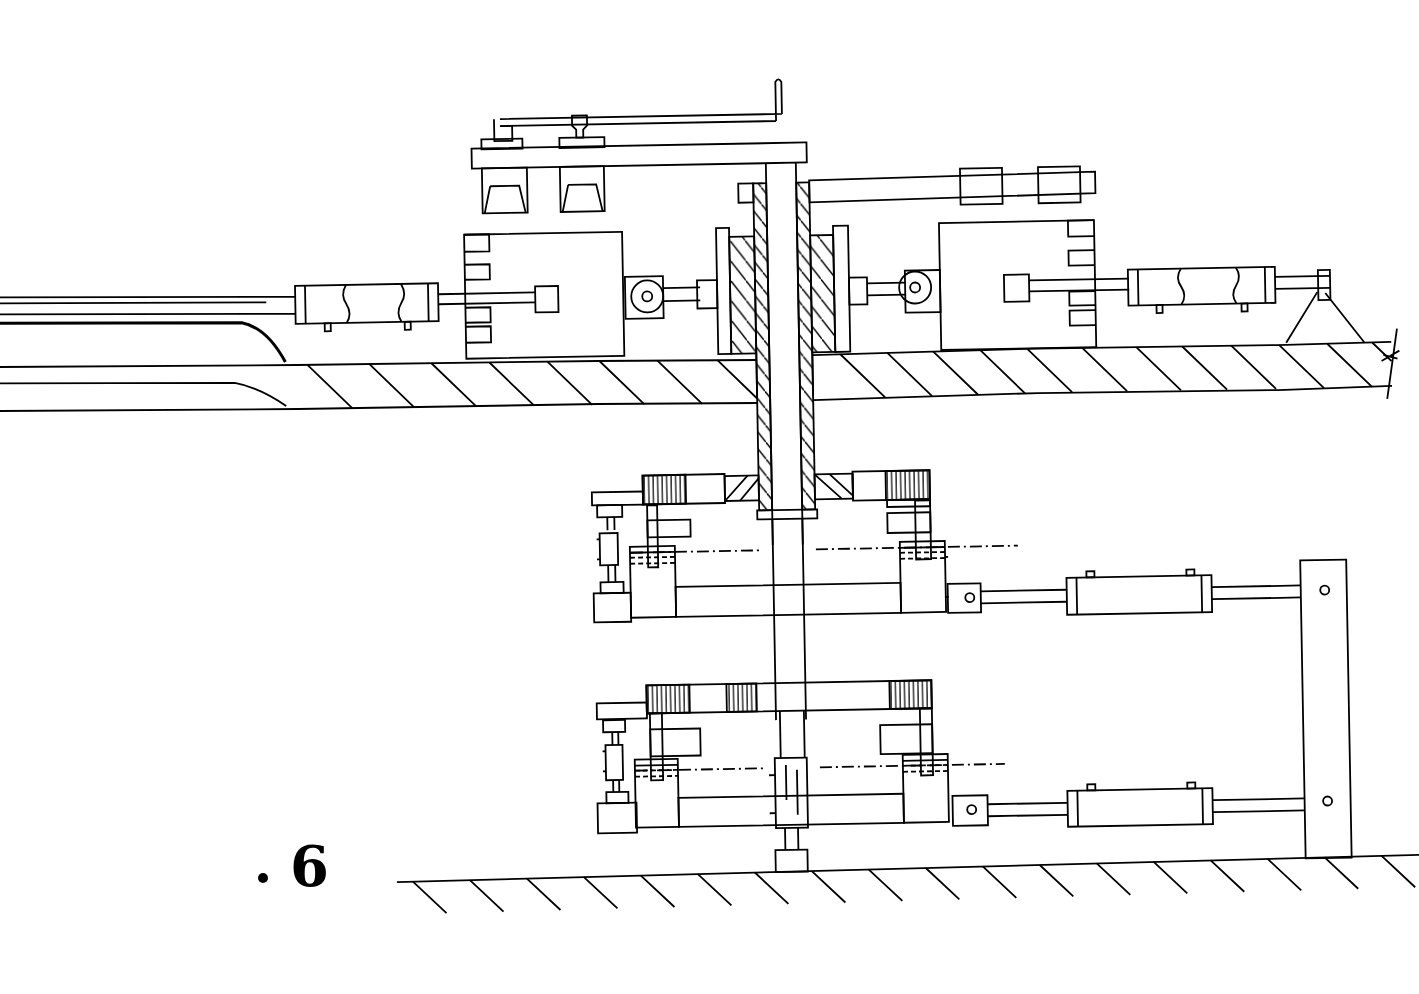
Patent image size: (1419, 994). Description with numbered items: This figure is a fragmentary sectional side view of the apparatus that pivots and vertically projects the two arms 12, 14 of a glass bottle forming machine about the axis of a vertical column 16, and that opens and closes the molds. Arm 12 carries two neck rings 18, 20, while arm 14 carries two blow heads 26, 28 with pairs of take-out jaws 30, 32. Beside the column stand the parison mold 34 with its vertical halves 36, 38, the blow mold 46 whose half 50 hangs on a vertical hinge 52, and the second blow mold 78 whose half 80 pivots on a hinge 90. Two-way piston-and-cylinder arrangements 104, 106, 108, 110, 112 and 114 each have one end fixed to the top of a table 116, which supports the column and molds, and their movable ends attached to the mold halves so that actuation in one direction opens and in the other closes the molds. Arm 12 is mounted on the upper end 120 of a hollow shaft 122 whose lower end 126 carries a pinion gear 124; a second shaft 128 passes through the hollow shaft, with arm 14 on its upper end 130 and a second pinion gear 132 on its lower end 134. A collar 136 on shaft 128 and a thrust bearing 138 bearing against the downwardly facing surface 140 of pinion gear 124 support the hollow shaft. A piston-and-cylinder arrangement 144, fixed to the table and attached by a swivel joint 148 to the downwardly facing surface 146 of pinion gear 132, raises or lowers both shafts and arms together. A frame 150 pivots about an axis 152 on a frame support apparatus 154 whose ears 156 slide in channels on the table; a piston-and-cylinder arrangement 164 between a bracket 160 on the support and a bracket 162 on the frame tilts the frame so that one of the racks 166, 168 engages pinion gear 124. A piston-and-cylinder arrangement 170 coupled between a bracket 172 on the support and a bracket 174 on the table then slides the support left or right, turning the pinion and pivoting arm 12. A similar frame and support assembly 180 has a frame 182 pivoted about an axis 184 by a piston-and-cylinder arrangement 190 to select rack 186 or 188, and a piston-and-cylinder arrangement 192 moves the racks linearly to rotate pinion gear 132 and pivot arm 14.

The arm 12 is at (900, 188).
The arm 14 is at (650, 145).
The column 16 is at (752, 208).
The neck ring 18 is at (1058, 166).
The neck ring 20 is at (980, 166).
The blow head 26 is at (490, 110).
The blow head 28 is at (573, 110).
The take-out jaws 30 is at (500, 204).
The take-out jaws 32 is at (583, 210).
The parison mold 34 is at (720, 232).
The mold half 36 is at (724, 262).
The mold half 38 is at (845, 264).
The blow mold 46 is at (1112, 212).
The mold half 50 is at (964, 268).
The hinge 52 is at (1105, 246).
The second blow mold 78 is at (400, 212).
The mold half 80 is at (572, 285).
The hinge 90 is at (470, 259).
The piston-and-cylinder arrangement 104 is at (655, 308).
The piston-and-cylinder arrangement 106 is at (915, 305).
The piston-and-cylinder arrangement 108 is at (1225, 268).
The piston-and-cylinder arrangement 110 is at (1155, 300).
The piston-and-cylinder arrangement 112 is at (318, 318).
The piston-and-cylinder arrangement 114 is at (365, 288).
The table 116 is at (378, 402).
The upper end of hollow shaft 120 is at (812, 205).
The hollow shaft 122 is at (758, 410).
The pinion gear 124 is at (852, 488).
The lower end of hollow shaft 126 is at (815, 480).
The second shaft 128 is at (772, 443).
The upper end of second shaft 130 is at (790, 175).
The second pinion gear 132 is at (848, 690).
The lower end of second shaft 134 is at (795, 688).
The collar 136 is at (764, 517).
The thrust bearing 138 is at (806, 512).
The downwardly facing surface of pinion gear 140 is at (848, 493).
The piston-and-cylinder arrangement 144 is at (770, 838).
The downwardly facing surface of pinion gear 146 is at (806, 720).
The swivel joint 148 is at (776, 727).
The frame 150 is at (983, 497).
The axis 152 is at (1018, 548).
The frame support apparatus 154 is at (940, 578).
The ears 156 is at (643, 618).
The bracket 160 is at (593, 609).
The bracket 162 is at (593, 496).
The piston-and-cylinder arrangement 164 is at (598, 548).
The rack 166 is at (672, 478).
The rack 168 is at (695, 525).
The piston-and-cylinder arrangement 170 is at (1140, 576).
The bracket 172 is at (975, 606).
The bracket 174 is at (1318, 560).
The frame and support assembly 180 is at (985, 736).
The frame 182 is at (938, 718).
The axis 184 is at (988, 760).
The rack 186 is at (660, 685).
The rack 188 is at (690, 735).
The piston-and-cylinder arrangement 190 is at (600, 760).
The piston-and-cylinder arrangement 192 is at (1140, 792).